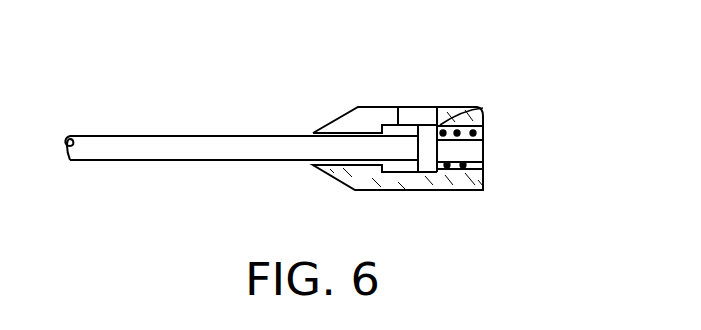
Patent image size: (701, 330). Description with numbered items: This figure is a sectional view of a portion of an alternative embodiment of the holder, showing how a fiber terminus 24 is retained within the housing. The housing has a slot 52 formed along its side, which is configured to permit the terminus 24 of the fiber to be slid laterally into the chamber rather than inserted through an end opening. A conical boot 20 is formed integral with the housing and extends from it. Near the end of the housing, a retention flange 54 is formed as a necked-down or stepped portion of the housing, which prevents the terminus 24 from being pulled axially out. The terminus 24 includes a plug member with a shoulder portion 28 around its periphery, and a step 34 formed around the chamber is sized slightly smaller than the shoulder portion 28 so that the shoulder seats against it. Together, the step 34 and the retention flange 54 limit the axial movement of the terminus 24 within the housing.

The boot 20 is at (332, 176).
The terminus 24 is at (468, 146).
The shoulder portion 28 is at (435, 173).
The step 34 is at (483, 108).
The slot 52 is at (430, 107).
The retention flange 54 is at (373, 125).